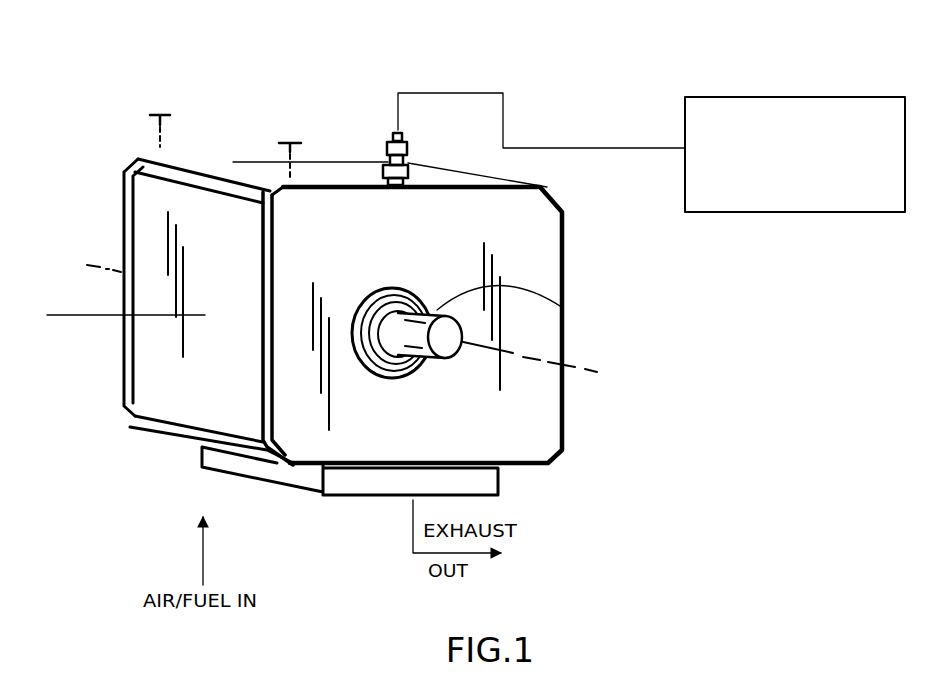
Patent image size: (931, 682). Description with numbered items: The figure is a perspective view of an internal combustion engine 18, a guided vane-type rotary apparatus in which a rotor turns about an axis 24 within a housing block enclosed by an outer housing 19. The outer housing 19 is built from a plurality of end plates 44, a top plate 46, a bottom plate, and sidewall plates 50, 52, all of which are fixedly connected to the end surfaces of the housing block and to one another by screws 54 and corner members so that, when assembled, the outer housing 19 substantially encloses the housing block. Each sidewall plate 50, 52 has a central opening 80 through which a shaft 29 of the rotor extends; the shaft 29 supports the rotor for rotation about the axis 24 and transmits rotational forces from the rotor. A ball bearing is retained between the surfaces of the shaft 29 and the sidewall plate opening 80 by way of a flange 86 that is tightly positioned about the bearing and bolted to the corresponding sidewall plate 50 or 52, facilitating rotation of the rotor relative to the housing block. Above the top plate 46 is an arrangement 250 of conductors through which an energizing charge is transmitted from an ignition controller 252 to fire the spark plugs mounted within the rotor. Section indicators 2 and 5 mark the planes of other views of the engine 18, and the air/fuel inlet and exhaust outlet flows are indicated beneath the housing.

The section line 2- 2 is at (47, 315).
The section line 5- 5 is at (337, 555).
The internal combustion engine 18 is at (83, 108).
The outer housing 19 is at (235, 163).
The axis 24 is at (573, 372).
The shaft 29 is at (577, 313).
The end plates 44 is at (565, 233).
The top plate 46 is at (433, 178).
The sidewall plate 50 is at (550, 463).
The sidewall plate 52 is at (125, 191).
The screws 54 is at (168, 114).
The central opening 80 is at (373, 376).
The flange 86 is at (395, 373).
The arrangement of conductors 250 is at (430, 76).
The ignition controller 252 is at (728, 212).